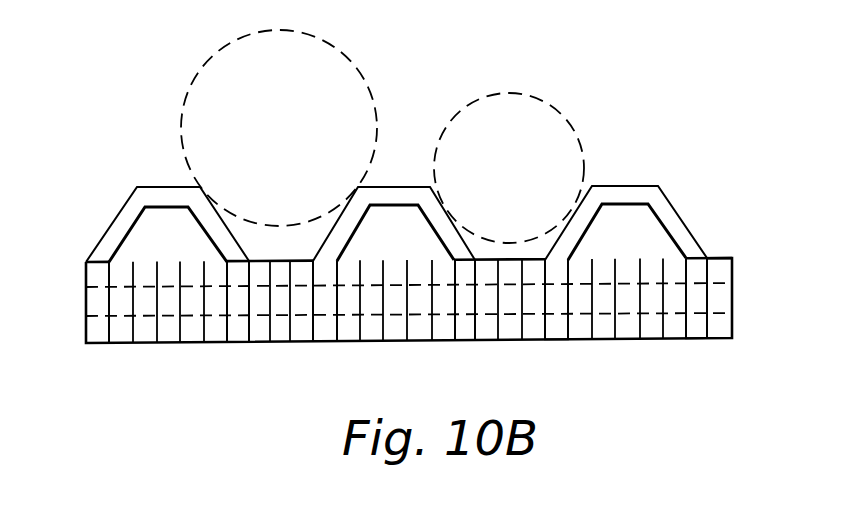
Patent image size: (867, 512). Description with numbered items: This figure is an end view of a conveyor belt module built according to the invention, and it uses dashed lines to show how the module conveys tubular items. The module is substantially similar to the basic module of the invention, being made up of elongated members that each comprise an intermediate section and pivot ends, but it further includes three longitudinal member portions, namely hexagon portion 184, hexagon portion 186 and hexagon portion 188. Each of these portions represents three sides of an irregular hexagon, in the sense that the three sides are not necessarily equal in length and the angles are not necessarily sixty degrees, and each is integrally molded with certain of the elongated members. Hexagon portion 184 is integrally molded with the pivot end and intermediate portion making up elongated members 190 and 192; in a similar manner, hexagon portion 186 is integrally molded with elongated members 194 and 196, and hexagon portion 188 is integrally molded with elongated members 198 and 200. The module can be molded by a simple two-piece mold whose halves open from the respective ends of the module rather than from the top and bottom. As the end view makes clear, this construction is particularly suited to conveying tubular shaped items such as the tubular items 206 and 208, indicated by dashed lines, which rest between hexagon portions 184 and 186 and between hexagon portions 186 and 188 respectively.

The hexagon portion 184 is at (118, 228).
The hexagon portion 186 is at (400, 185).
The hexagon portion 188 is at (628, 190).
The elongated member 190 is at (97, 335).
The elongated member 192 is at (238, 335).
The elongated member 194 is at (325, 330).
The elongated member 196 is at (465, 330).
The elongated member 198 is at (553, 330).
The elongated member 200 is at (697, 327).
The tubular shaped item 206 is at (577, 133).
The tubular shaped item 208 is at (212, 58).